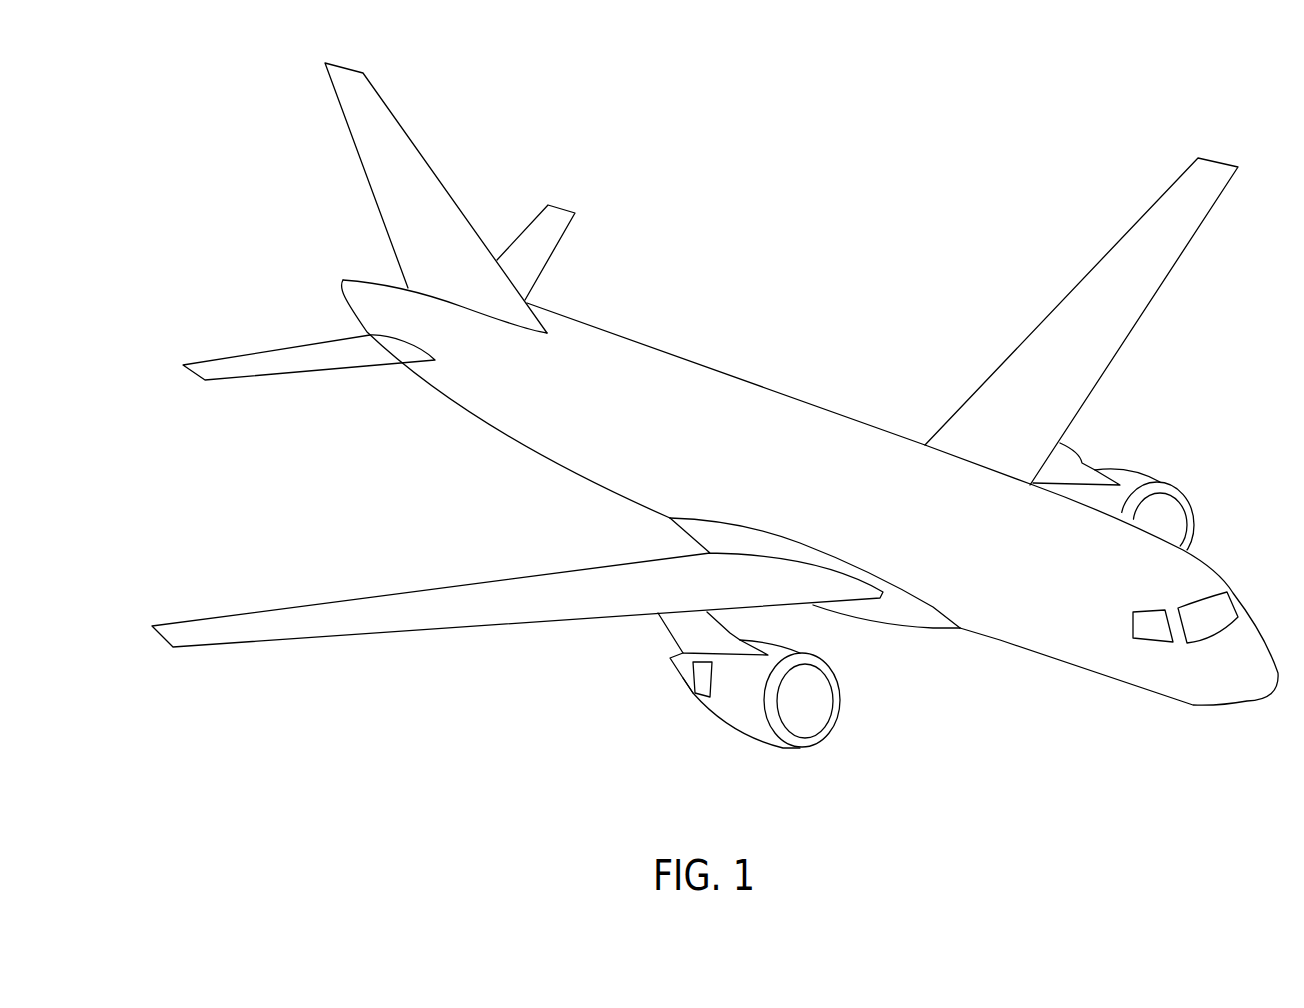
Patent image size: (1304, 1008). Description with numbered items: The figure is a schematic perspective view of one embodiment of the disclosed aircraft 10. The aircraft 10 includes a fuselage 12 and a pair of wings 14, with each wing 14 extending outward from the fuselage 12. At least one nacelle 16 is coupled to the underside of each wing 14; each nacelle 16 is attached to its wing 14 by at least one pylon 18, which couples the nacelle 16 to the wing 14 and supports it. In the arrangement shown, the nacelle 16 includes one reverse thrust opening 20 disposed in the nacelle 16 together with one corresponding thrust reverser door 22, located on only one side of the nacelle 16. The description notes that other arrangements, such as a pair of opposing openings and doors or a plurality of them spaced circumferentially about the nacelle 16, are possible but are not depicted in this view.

The aircraft 10 is at (825, 287).
The fuselage 12 is at (795, 402).
The wing 14 is at (523, 578).
The nacelle 16 is at (732, 733).
The pylon 18 is at (670, 628).
The reverse thrust opening 20 is at (690, 697).
The thrust reverser door 22 is at (688, 678).